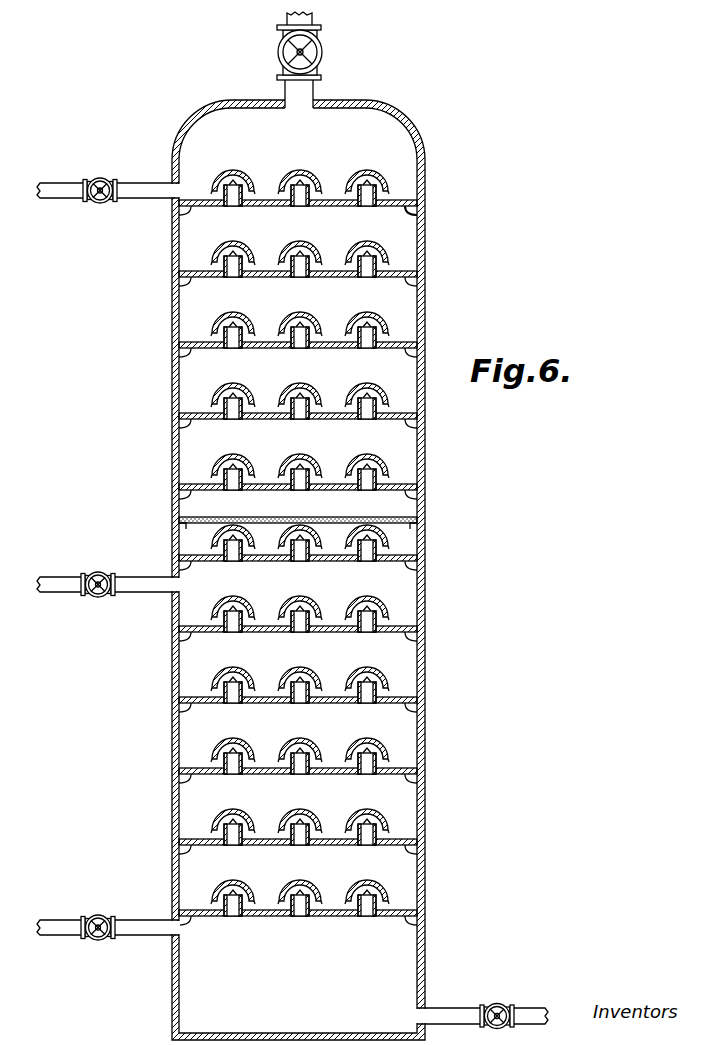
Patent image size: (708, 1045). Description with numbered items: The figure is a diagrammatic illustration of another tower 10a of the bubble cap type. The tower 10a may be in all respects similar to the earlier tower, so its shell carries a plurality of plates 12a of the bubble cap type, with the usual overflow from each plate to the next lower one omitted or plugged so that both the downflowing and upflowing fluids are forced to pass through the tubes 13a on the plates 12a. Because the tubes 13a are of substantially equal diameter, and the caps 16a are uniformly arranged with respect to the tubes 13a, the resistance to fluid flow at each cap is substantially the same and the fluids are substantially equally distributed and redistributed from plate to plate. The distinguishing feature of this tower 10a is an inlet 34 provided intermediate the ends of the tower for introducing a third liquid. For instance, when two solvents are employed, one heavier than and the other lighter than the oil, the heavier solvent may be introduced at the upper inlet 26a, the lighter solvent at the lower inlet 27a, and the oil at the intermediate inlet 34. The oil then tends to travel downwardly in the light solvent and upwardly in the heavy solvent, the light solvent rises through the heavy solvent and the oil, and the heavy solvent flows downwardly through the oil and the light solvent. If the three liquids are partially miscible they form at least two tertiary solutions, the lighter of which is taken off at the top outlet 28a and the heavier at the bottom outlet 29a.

The tower 10a is at (430, 540).
The tray support bracket 12a is at (412, 212).
The tray 13a is at (380, 197).
The bubble cap 16a is at (391, 160).
The inlet 26a is at (140, 192).
The inlet 27a is at (152, 928).
The outlet 28a is at (302, 98).
The outlet 29a is at (431, 1014).
The inlet 34 is at (150, 585).